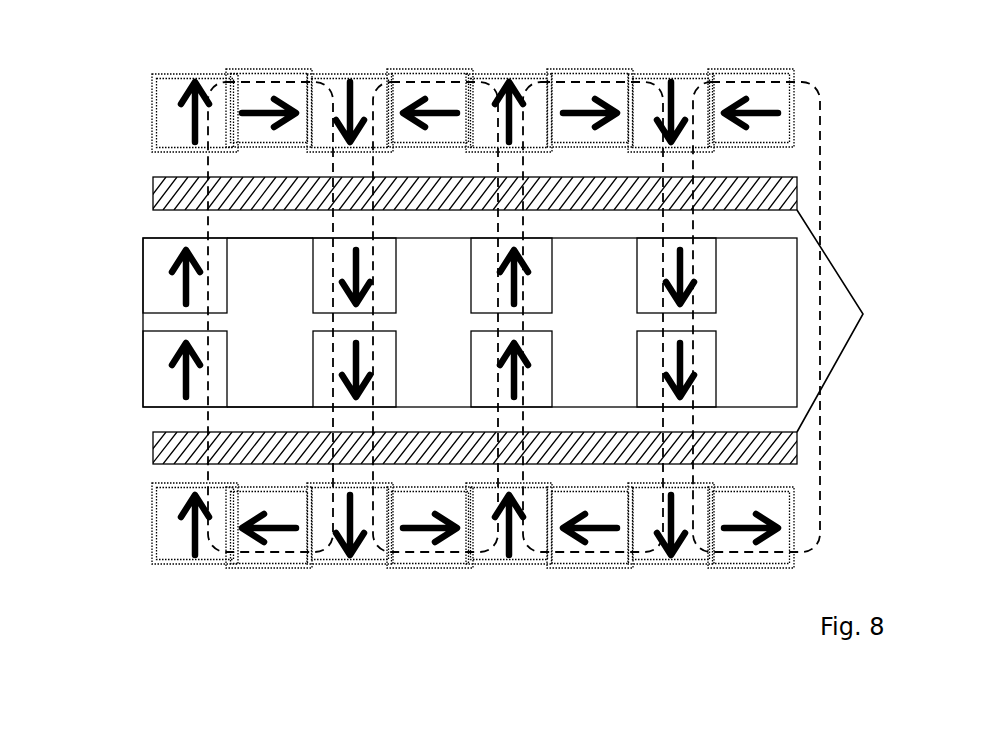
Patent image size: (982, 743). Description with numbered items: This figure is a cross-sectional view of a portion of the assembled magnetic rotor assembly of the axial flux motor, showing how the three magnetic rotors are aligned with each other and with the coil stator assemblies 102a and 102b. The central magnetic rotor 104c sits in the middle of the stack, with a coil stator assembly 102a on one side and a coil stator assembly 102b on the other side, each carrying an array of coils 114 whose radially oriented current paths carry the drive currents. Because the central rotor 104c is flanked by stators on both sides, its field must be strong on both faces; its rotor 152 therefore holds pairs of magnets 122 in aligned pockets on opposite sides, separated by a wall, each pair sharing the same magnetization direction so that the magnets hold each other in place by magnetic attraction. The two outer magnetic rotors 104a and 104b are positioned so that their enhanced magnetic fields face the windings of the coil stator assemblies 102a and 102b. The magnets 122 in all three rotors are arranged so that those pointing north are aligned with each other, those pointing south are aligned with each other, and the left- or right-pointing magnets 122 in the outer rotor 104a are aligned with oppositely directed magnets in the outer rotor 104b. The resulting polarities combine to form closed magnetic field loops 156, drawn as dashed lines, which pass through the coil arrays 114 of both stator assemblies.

The coil stator assembly 102a is at (126, 447).
The coil stator assembly 102b is at (133, 203).
The outer magnetic rotor 104a is at (118, 522).
The outer magnetic rotor 104b is at (133, 120).
The central magnetic rotor 104c is at (126, 320).
The array of coils 114 is at (848, 321).
The magnet 122 is at (405, 91).
The rotor 152 is at (283, 393).
The magnetic field loops 156 is at (593, 82).